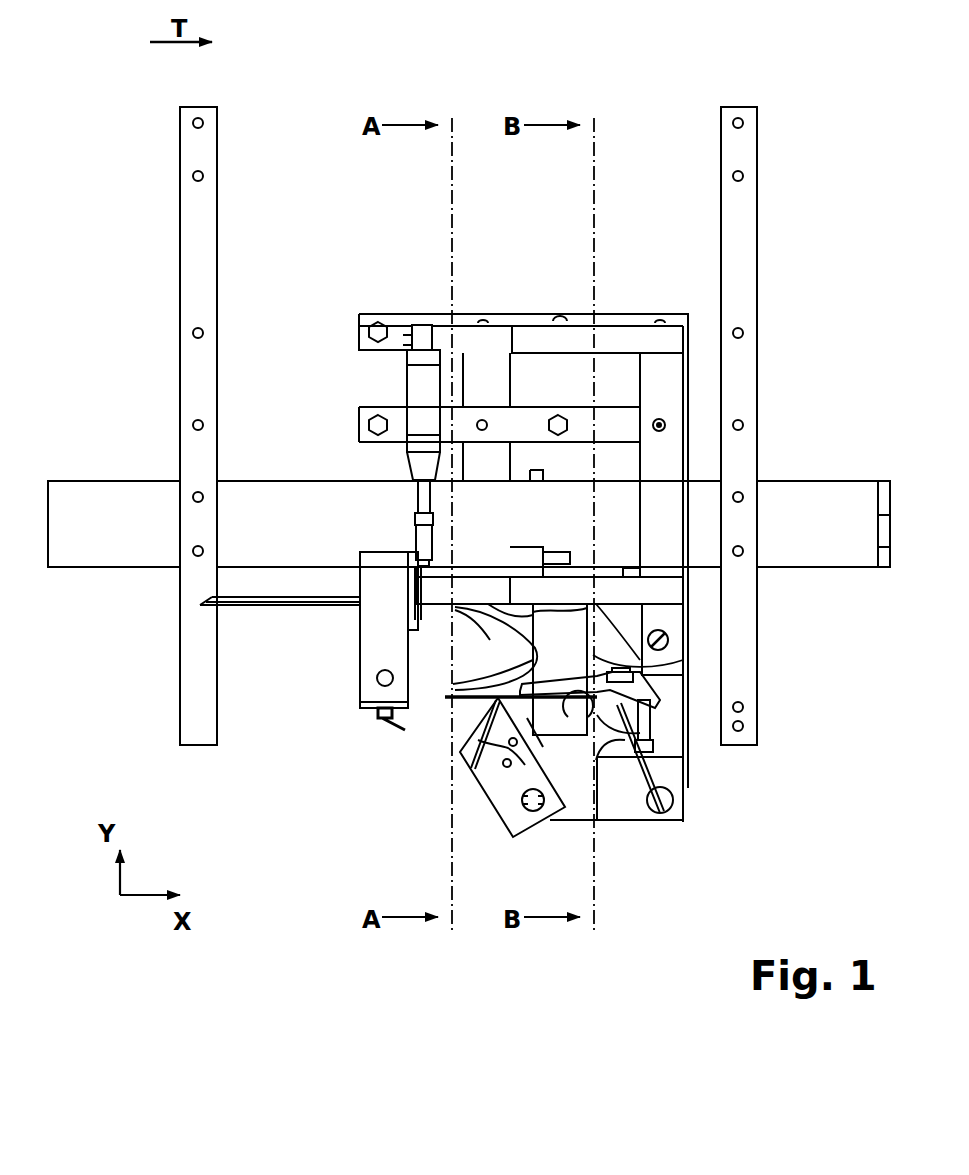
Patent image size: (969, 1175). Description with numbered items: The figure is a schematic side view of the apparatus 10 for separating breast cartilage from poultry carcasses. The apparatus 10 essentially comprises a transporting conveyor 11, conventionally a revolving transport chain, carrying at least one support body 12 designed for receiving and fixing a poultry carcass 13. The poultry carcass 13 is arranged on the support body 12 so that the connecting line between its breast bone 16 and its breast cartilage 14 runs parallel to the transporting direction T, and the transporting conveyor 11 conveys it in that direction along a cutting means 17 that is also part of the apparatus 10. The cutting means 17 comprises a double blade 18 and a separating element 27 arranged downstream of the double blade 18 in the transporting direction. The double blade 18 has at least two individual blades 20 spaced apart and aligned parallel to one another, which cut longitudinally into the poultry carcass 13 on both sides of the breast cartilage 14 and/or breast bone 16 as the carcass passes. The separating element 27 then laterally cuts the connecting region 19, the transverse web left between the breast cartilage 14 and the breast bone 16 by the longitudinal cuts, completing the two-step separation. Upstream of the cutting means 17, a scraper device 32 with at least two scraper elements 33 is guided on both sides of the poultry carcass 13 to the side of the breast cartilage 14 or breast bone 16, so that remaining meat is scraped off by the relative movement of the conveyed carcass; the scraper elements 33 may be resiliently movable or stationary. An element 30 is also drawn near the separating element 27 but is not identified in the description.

The apparatus 10 is at (326, 836).
The transporting conveyor 11 is at (222, 598).
The support body 12 is at (470, 650).
The poultry carcass 13 is at (603, 657).
The breast cartilage 14 is at (512, 718).
The breast bone 16 is at (576, 748).
The cutting means 17 is at (691, 840).
The double blade 18 is at (478, 781).
The connecting region 19 is at (542, 747).
The individual blade 20 is at (466, 731).
The separating element 27 is at (655, 778).
The actuating rod 30 is at (650, 725).
The scraper device 32 is at (364, 631).
The scraper element 33 is at (380, 727).